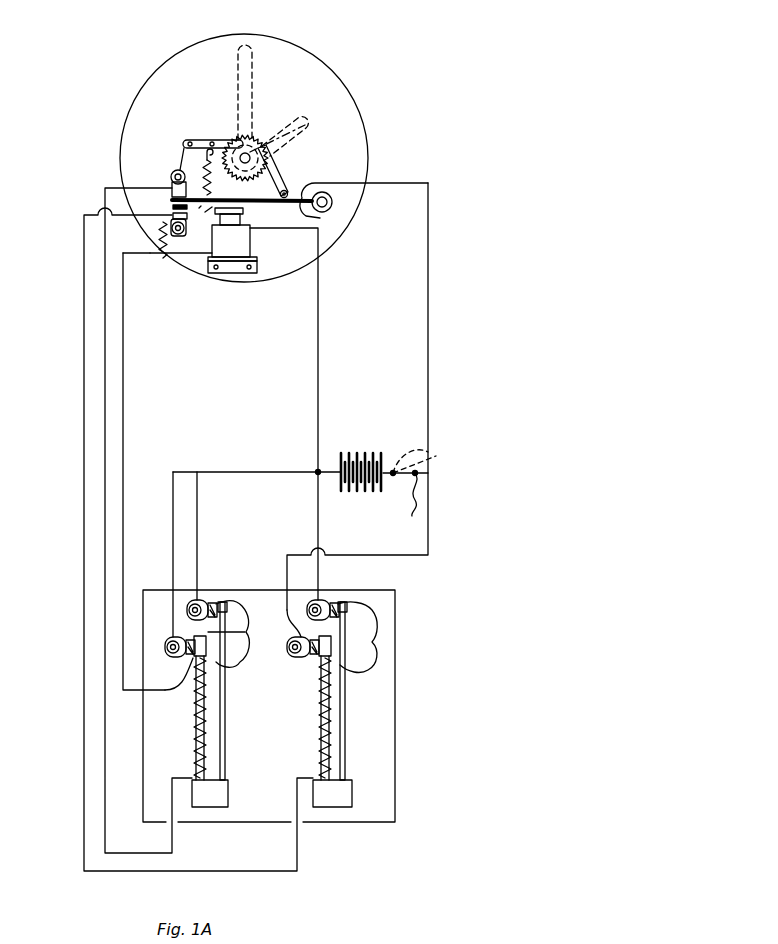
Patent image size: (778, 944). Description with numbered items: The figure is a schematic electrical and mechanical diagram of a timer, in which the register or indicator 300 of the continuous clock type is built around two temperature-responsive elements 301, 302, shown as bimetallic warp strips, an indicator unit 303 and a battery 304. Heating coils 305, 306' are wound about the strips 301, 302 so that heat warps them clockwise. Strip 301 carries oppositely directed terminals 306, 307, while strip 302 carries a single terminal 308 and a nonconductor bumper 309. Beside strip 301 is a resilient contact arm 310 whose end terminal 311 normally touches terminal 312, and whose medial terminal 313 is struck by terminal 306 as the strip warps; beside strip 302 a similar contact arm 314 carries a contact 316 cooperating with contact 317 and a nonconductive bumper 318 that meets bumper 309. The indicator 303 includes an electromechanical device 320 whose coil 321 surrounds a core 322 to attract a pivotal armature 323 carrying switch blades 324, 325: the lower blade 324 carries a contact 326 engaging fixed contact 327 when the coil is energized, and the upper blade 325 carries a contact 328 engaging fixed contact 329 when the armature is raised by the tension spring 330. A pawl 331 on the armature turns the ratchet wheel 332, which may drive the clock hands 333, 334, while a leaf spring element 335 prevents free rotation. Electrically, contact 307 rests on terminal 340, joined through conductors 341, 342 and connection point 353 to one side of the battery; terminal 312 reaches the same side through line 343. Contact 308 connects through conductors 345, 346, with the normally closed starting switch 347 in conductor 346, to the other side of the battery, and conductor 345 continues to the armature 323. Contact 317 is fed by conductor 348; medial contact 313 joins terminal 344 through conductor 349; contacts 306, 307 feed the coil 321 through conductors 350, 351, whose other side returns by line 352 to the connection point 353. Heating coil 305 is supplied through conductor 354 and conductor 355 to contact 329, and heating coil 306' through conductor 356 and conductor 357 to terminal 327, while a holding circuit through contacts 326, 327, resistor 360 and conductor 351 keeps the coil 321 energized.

The register or indicator 300 is at (383, 187).
The temperature-responsive element 301 is at (195, 760).
The temperature-responsive element 302 is at (320, 758).
The indicator unit 303 is at (377, 161).
The battery 304 is at (366, 440).
The heating coil 305 is at (195, 746).
The terminal 306 is at (177, 631).
The heating coil 306' is at (301, 692).
The terminal 307 is at (173, 634).
The terminal 308 is at (320, 676).
The nonconductor bumper 309 is at (320, 645).
The contact arm 310 is at (226, 772).
The terminal 311 is at (215, 602).
The terminal 312 is at (203, 598).
The terminal 313 is at (227, 678).
The contact arm 314 is at (346, 772).
The contact 316 is at (345, 598).
The contact 317 is at (324, 600).
The nonconductive bumper 318 is at (331, 650).
The electromechanical device 320 is at (247, 276).
The coil 321 is at (251, 240).
The core 322 is at (244, 211).
The armature 323 is at (321, 213).
The switch blade 324 is at (199, 208).
The switch blade 325 is at (192, 172).
The contact 326 is at (174, 206).
The fixed contact 327 is at (173, 217).
The contact 328 is at (172, 187).
The fixed contact 329 is at (172, 172).
The tension spring 330 is at (212, 184).
The pawl 331 is at (276, 170).
The ratchet wheel 332 is at (256, 137).
The clock hand 333 is at (307, 128).
The clock hand 334 is at (250, 72).
The leaf spring element 335 is at (228, 138).
The terminal 340 is at (182, 663).
The conductor 341 is at (173, 521).
The conductor 342 is at (268, 471).
The line 343 is at (198, 507).
The terminal 344 is at (312, 660).
The conductor 345 is at (430, 318).
The conductor 346 is at (400, 497).
The starting switch 347 is at (430, 463).
The conductor 348 is at (316, 510).
The conductor 349 is at (272, 636).
The conductor 350 is at (124, 334).
The conductor 351 is at (140, 240).
The line 352 is at (320, 318).
The connection point 353 is at (318, 471).
The conductor 354 is at (233, 614).
The conductor 355 is at (104, 190).
The conductor 356 is at (377, 622).
The conductor 357 is at (84, 218).
The resistor 360 is at (171, 233).